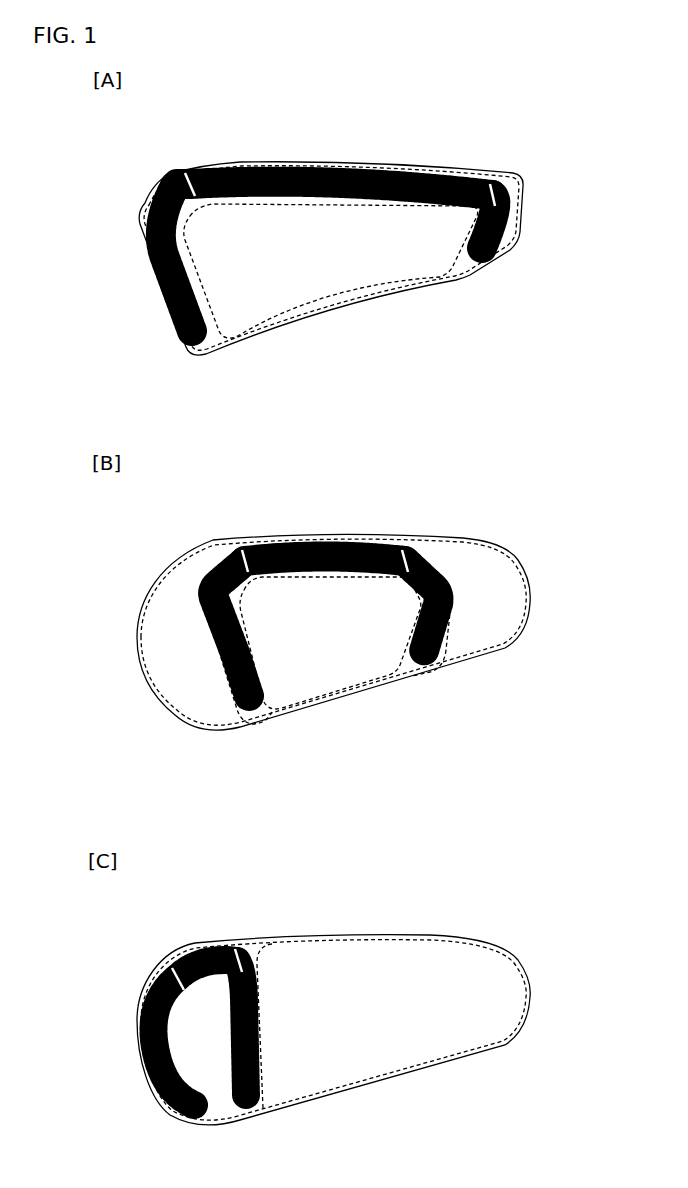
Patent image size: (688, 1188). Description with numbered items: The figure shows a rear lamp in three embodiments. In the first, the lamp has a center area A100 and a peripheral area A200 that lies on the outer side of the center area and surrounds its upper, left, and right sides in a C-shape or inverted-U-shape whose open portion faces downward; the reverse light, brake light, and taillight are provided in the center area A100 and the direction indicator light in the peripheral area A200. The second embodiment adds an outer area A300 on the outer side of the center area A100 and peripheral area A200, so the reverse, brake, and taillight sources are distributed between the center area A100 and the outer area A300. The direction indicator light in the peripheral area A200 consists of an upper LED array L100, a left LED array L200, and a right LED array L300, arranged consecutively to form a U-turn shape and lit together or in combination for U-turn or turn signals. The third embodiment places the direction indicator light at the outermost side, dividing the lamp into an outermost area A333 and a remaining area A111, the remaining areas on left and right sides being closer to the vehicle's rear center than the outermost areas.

The upper LED array L100 is at (385, 167).
The left LED array L200 is at (157, 257).
The right LED array L300 is at (507, 225).
The center area A100 is at (338, 282).
The peripheral area A200 is at (299, 165).
The outer area A300 is at (163, 597).
The remaining area A111 is at (425, 967).
The outermost area A333 is at (202, 1020).